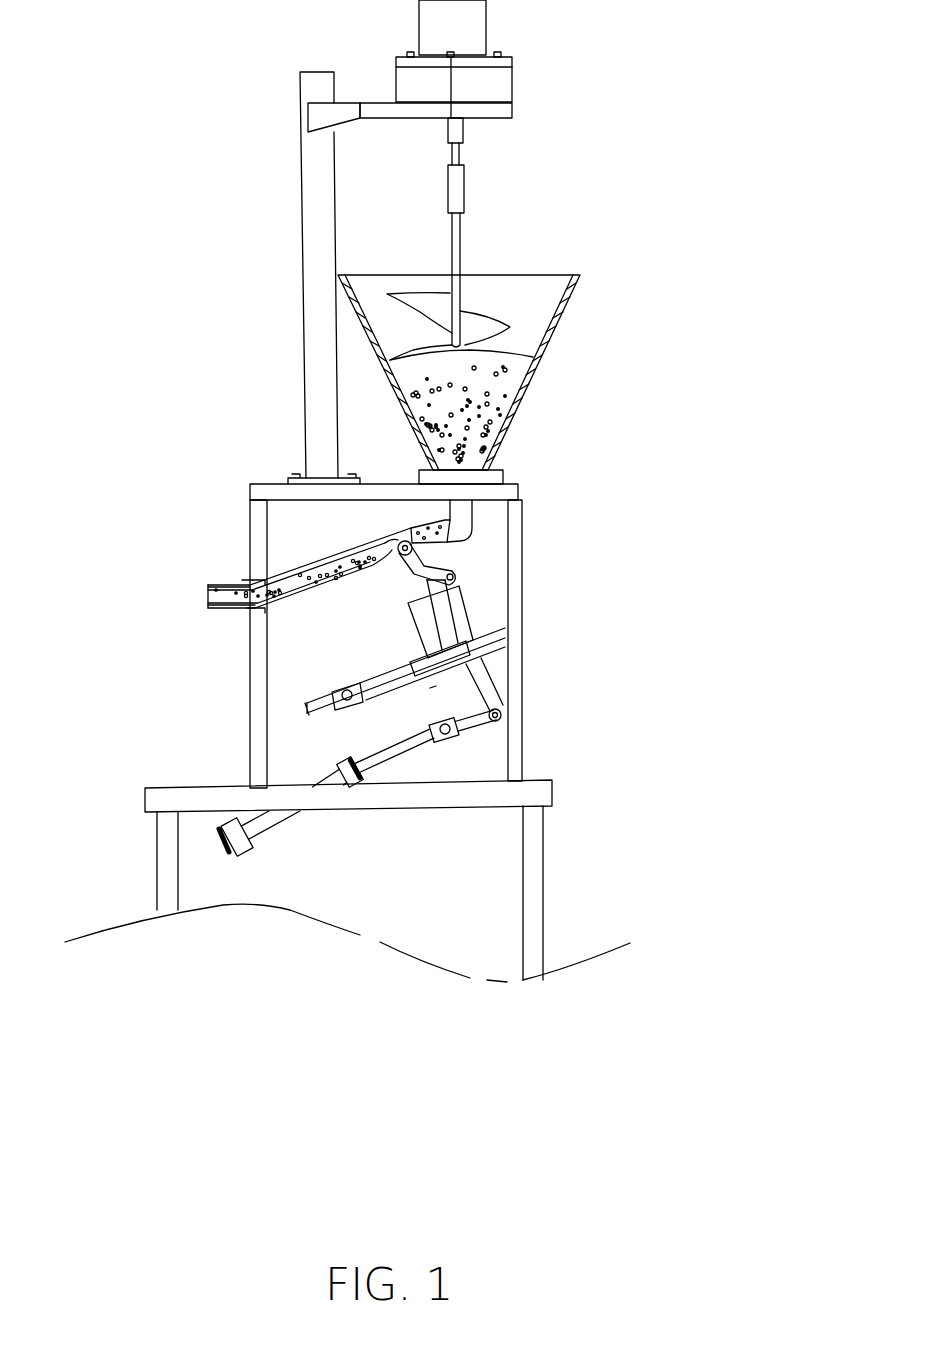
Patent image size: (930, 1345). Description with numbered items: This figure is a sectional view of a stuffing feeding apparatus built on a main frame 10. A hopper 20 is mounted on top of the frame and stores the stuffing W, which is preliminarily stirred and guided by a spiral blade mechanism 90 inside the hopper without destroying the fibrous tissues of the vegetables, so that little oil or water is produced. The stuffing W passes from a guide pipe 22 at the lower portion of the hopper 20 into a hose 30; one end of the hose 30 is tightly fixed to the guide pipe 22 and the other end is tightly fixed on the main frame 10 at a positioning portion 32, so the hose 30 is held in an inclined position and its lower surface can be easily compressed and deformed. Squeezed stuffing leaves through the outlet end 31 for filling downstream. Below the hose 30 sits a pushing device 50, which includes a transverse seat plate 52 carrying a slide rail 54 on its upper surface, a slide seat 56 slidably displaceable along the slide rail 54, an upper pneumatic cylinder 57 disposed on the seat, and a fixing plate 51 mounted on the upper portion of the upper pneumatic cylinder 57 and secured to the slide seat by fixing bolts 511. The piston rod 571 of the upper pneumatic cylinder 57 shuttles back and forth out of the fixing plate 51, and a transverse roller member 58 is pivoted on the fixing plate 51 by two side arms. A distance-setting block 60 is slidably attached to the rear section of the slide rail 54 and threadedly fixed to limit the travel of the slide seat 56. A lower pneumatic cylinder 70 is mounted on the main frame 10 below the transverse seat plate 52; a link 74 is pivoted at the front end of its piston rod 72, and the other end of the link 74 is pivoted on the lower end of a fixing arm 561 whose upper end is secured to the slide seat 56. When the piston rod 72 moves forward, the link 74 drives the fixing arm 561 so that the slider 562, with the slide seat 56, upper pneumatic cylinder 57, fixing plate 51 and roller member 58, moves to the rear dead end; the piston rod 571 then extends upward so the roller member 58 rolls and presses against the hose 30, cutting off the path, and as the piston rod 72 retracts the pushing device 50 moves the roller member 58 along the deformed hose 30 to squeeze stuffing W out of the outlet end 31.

The main frame 10 is at (587, 815).
The hopper 20 is at (550, 333).
The stuffing W is at (490, 413).
The spiral blade mechanism 90 is at (485, 328).
The guide pipe 22 is at (462, 522).
The hose 30 is at (347, 553).
The outlet end 31 is at (208, 593).
The positioning portion 32 is at (250, 587).
The pushing device 50 is at (468, 583).
The roller member 58 is at (417, 545).
The slide rail 54 is at (480, 637).
The upper pneumatic cylinder 57 is at (462, 628).
The piston rod 571 is at (440, 580).
The transverse seat plate 52 is at (459, 666).
The link 74 is at (459, 667).
The fixing plate 51 is at (437, 622).
The fixing bolts 511 is at (459, 590).
The slide seat 56 is at (425, 650).
The fixing arm 561 is at (430, 686).
The slider 562 is at (429, 732).
The distance-setting block 60 is at (440, 662).
The piston rod 72 is at (386, 759).
The lower pneumatic cylinder 70 is at (270, 822).